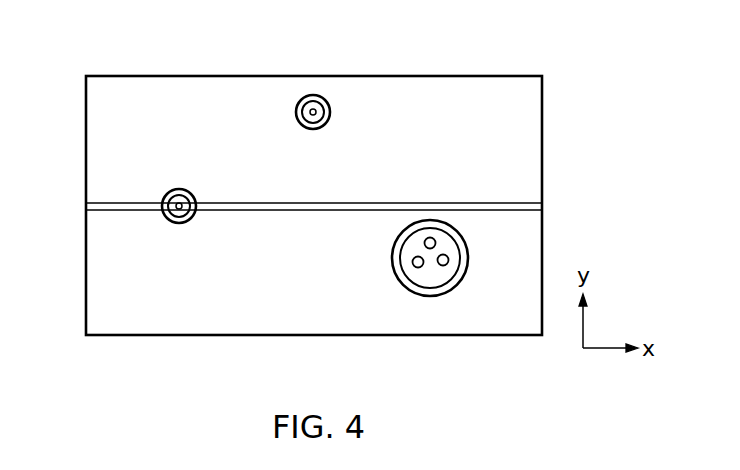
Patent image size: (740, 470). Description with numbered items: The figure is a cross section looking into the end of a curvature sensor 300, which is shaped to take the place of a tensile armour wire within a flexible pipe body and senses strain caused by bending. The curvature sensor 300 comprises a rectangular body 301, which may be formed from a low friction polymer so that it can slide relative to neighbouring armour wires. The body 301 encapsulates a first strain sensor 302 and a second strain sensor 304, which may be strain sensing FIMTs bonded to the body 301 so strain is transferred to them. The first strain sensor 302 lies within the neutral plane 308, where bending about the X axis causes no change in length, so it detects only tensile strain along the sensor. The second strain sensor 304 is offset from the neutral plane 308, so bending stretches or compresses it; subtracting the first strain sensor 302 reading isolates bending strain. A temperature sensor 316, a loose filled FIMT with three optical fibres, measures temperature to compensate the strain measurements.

The curvature sensor 300 is at (558, 117).
The body 301 is at (187, 95).
The first strain sensor 302 is at (165, 193).
The second strain sensor 304 is at (308, 95).
The neutral plane 308 is at (510, 203).
The temperature sensor 316 is at (436, 270).